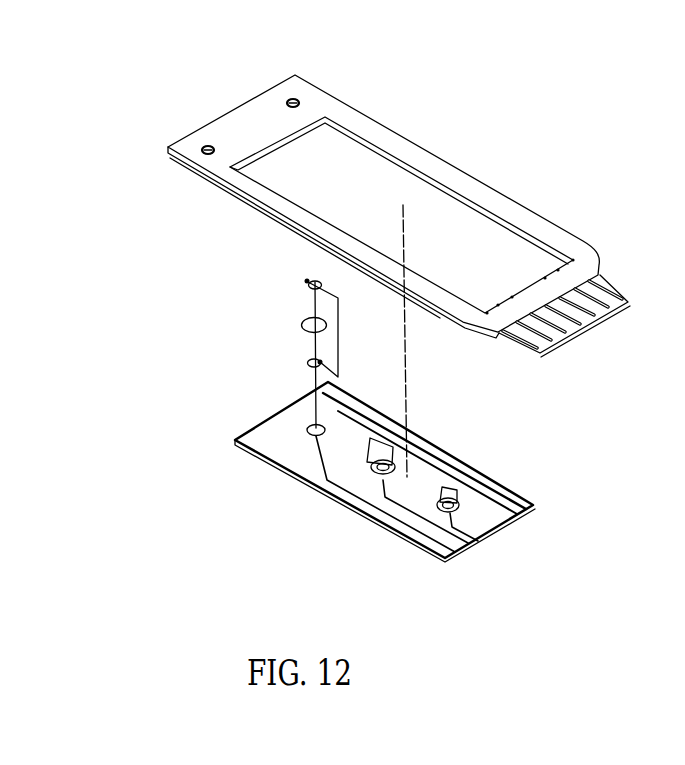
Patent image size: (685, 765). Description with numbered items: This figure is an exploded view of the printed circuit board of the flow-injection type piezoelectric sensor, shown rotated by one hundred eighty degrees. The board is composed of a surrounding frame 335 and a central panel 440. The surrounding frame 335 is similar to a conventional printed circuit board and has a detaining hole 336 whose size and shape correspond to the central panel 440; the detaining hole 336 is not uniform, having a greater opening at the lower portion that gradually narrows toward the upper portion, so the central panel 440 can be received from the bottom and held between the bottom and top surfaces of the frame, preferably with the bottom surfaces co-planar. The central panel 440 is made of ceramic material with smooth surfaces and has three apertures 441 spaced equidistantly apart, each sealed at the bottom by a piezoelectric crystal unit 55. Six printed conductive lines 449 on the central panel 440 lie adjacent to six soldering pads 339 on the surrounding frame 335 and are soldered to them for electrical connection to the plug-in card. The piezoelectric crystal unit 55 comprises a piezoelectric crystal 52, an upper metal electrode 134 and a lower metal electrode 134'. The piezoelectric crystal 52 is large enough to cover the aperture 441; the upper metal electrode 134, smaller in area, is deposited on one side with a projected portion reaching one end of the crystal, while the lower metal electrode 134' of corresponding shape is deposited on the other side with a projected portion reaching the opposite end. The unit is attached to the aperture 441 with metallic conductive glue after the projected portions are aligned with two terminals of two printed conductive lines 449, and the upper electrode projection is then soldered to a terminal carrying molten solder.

The surrounding frame 335 is at (243, 128).
The detaining hole 336 is at (375, 176).
The soldering pads 339 is at (587, 244).
The lower metal electrode 134' is at (282, 271).
The piezoelectric crystal 52 is at (302, 322).
The upper metal electrode 134 is at (282, 354).
The piezoelectric crystal unit 55 is at (338, 335).
The printed conductive lines 449 is at (480, 475).
The apertures 441 is at (305, 430).
The central panel 440 is at (355, 513).